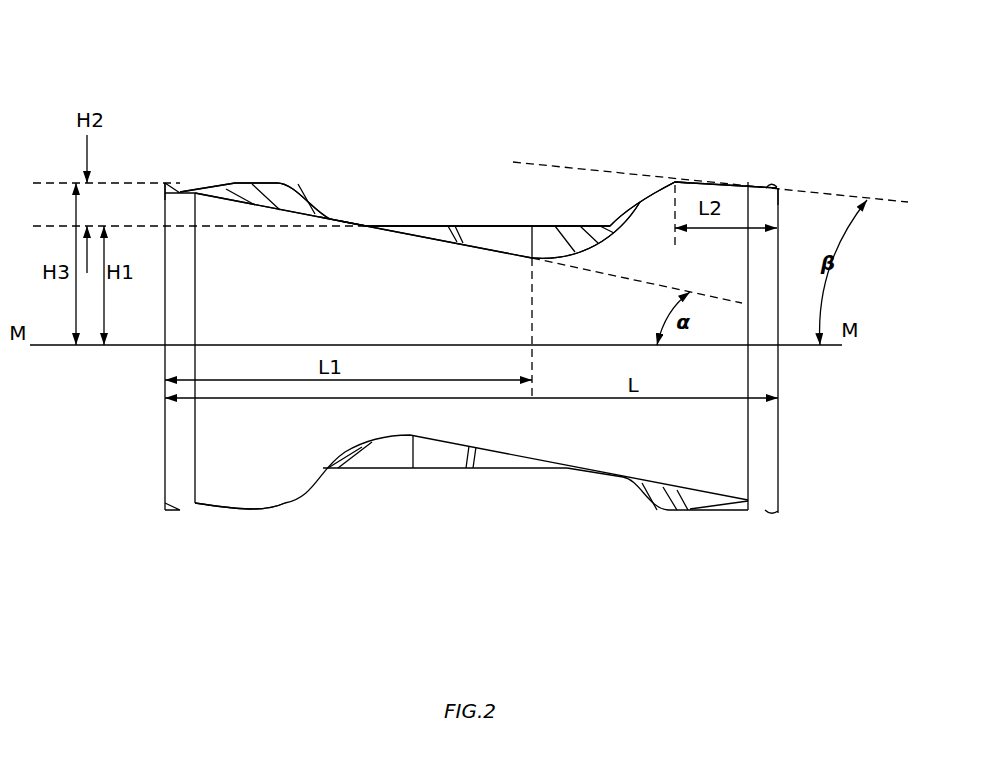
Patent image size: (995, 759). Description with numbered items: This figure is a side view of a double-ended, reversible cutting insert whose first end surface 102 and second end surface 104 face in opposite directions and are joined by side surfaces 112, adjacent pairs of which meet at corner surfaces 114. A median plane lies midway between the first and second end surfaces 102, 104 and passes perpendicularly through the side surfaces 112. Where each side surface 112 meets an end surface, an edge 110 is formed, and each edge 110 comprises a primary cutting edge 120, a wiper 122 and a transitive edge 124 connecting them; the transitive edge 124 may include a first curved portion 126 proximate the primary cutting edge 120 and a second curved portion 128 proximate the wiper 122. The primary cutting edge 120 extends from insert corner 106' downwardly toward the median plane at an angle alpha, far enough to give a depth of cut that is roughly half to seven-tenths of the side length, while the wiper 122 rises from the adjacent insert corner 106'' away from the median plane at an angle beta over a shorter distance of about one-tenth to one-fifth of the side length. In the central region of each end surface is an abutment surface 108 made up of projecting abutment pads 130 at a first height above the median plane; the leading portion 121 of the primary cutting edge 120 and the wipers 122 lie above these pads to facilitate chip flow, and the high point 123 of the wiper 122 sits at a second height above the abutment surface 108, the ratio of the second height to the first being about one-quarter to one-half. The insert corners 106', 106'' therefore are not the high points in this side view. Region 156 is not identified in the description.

The first end surface 102 is at (595, 86).
The second end surface 104 is at (637, 518).
The insert corner 106' is at (172, 147).
The insert corner 106'' is at (802, 166).
The abutment surface 108 is at (432, 225).
The edge 110 is at (327, 216).
The side surface 112 is at (260, 467).
The corner surface 114 is at (177, 310).
The primary cutting edge 120 is at (352, 222).
The leading portion 121 is at (265, 213).
The wiper 122 is at (243, 182).
The high point 123 is at (277, 183).
The transitive edge 124 is at (631, 212).
The first curved portion 126 is at (571, 263).
The second curved portion 128 is at (668, 180).
The projecting abutment pads 130 is at (488, 138).
The intermediate region 156 is at (499, 240).